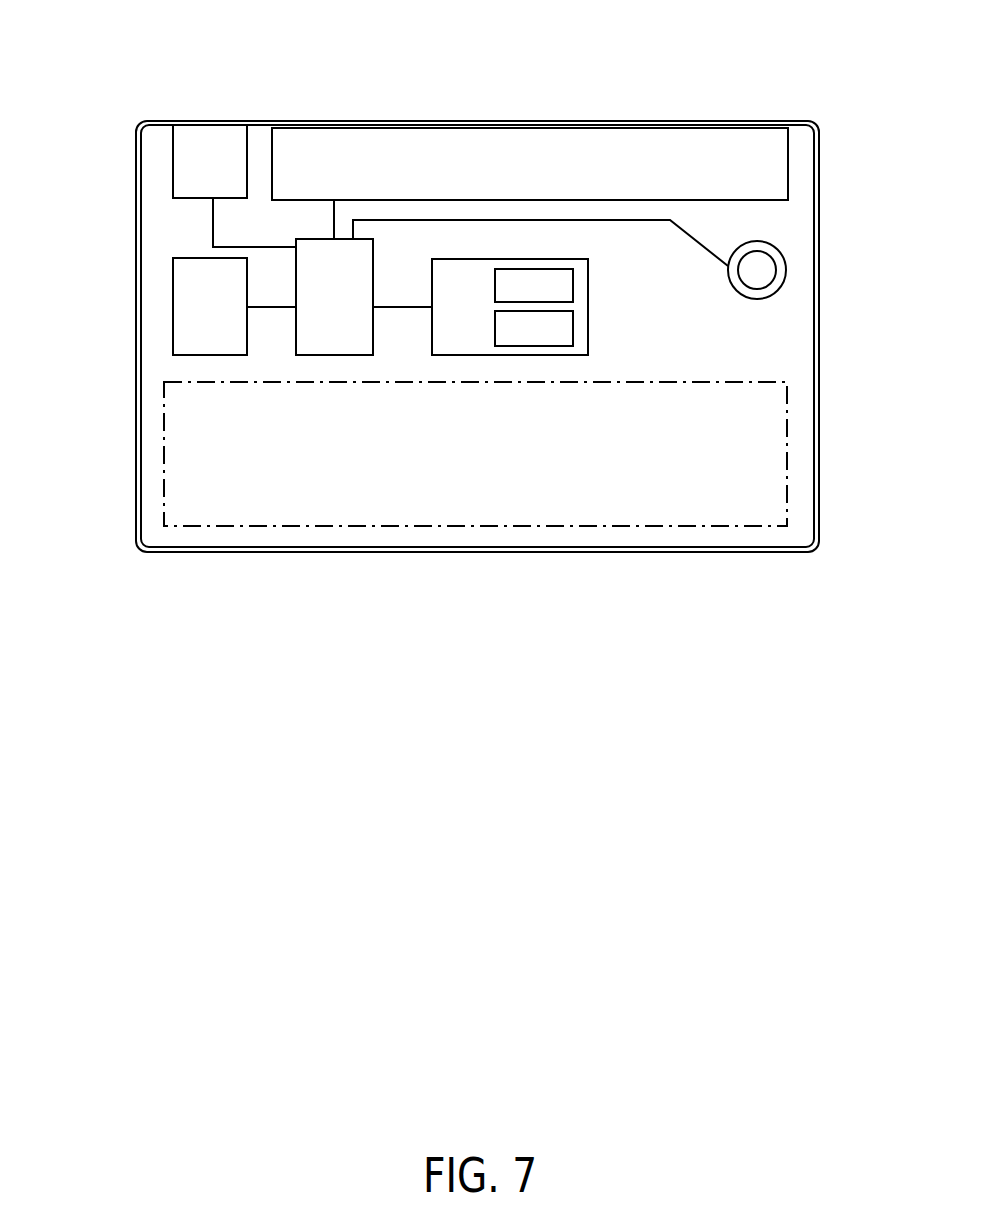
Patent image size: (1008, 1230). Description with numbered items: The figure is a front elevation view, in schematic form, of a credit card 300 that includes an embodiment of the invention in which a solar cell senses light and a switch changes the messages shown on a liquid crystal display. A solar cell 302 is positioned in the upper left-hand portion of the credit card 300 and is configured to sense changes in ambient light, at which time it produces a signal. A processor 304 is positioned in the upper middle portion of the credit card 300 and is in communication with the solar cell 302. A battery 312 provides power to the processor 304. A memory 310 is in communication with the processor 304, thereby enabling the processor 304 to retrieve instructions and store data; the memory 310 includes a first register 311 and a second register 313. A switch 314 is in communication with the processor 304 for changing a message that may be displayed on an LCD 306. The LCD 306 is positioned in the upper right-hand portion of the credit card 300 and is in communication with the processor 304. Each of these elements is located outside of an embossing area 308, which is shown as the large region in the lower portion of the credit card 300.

The credit card 300 is at (498, 78).
The solar cell 302 is at (173, 160).
The processor 304 is at (336, 355).
The LCD 306 is at (788, 163).
The embossing area 308 is at (688, 383).
The memory 310 is at (588, 307).
The first register 311 is at (573, 330).
The battery 312 is at (173, 307).
The second register 313 is at (493, 287).
The switch 314 is at (786, 268).